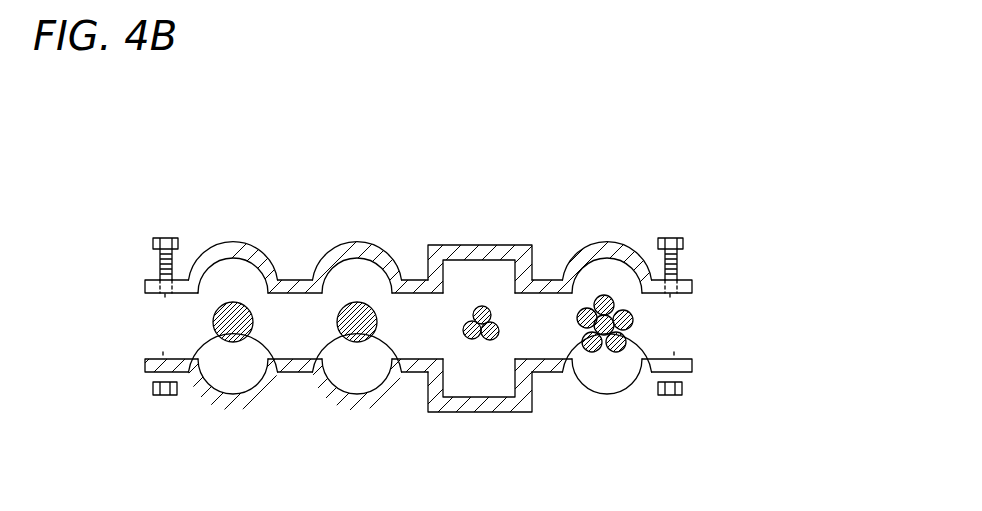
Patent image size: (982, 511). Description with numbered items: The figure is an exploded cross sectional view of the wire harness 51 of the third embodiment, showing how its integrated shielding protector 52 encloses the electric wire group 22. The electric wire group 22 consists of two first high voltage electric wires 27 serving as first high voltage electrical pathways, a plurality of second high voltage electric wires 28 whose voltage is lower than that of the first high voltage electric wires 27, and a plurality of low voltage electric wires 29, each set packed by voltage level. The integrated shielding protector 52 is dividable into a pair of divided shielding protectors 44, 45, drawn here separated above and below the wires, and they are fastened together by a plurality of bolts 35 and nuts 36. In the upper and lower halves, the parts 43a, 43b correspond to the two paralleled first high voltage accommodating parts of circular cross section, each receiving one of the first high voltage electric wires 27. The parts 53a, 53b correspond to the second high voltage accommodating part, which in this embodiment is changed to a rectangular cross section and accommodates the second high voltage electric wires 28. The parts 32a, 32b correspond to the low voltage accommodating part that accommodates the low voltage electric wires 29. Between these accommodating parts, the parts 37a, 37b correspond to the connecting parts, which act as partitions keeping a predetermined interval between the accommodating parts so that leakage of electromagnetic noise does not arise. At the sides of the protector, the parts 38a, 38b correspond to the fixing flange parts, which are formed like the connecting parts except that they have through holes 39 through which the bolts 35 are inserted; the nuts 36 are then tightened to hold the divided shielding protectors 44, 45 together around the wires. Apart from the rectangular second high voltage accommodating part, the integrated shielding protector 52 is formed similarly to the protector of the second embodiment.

The electric wire group 22 is at (203, 57).
The first high voltage electric wire 27 is at (320, 481).
The second high voltage electric wire 28 is at (447, 471).
The low voltage electric wire 29 is at (588, 473).
The low voltage accommodating part portion 32a is at (621, 252).
The low voltage accommodating part portion 32b is at (617, 378).
The bolt 35 is at (162, 237).
The nut 36 is at (150, 394).
The connecting part portion 37a is at (297, 280).
The connecting part portion 37b is at (285, 373).
The fixing flange part portion 38a is at (144, 285).
The fixing flange part portion 38b is at (144, 363).
The through hole 39 is at (165, 300).
The first high voltage accommodating part portion 43a is at (231, 266).
The first high voltage accommodating part portion 43b is at (217, 385).
The divided shielding protector 44 is at (215, 248).
The divided shielding protector 45 is at (187, 398).
The wire harness 51 is at (549, 186).
The integrated shielding protector 52 is at (460, 245).
The second high voltage accommodating part portion 53a is at (497, 255).
The second high voltage accommodating part portion 53b is at (487, 372).